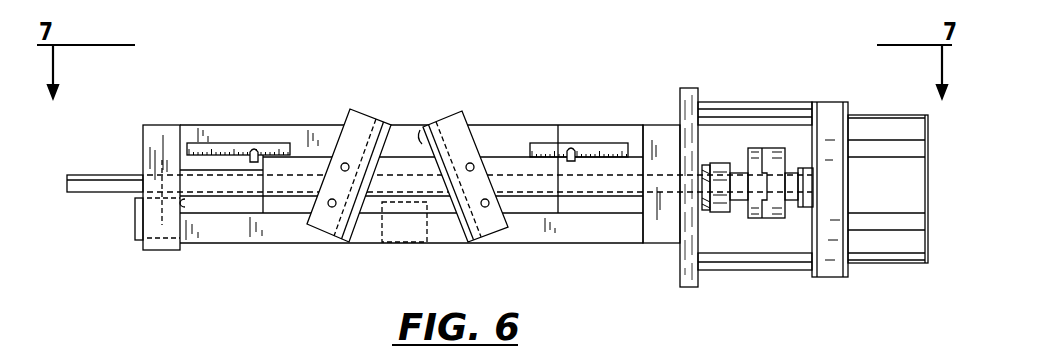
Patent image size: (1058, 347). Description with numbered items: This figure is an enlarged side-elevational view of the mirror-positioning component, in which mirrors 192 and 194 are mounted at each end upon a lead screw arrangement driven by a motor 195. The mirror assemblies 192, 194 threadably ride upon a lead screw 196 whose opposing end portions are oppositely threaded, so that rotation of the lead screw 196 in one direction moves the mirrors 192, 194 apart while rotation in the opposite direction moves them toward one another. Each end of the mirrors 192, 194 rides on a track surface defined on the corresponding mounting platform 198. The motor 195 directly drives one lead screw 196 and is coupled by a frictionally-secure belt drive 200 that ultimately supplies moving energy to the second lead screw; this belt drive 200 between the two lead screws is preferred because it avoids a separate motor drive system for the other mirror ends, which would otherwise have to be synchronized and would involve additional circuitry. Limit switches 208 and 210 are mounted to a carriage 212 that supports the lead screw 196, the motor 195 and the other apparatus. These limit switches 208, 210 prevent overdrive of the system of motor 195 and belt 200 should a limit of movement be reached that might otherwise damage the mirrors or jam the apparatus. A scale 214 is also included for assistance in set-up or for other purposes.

The mirror 192 is at (393, 141).
The mirror 194 is at (418, 129).
The motor 195 is at (887, 115).
The lead screw 196 is at (675, 182).
The mounting platform 198 is at (515, 163).
The belt drive 200 is at (705, 208).
The limit switch 208 is at (383, 243).
The limit switch 210 is at (139, 244).
The carriage 212 is at (568, 127).
The scale 214 is at (267, 146).